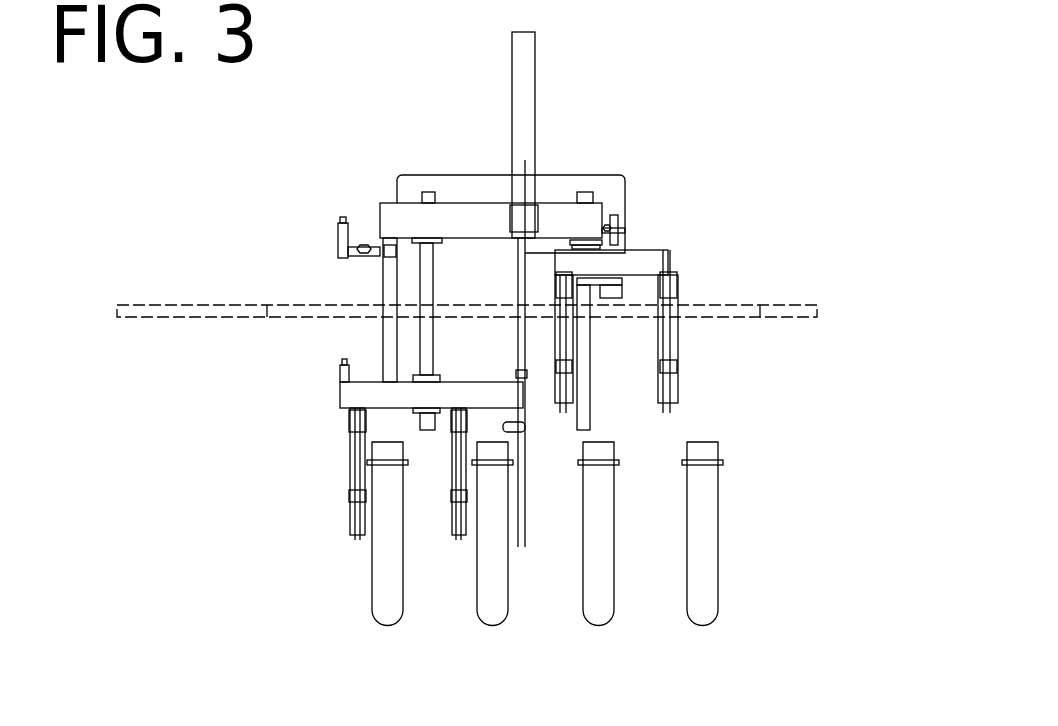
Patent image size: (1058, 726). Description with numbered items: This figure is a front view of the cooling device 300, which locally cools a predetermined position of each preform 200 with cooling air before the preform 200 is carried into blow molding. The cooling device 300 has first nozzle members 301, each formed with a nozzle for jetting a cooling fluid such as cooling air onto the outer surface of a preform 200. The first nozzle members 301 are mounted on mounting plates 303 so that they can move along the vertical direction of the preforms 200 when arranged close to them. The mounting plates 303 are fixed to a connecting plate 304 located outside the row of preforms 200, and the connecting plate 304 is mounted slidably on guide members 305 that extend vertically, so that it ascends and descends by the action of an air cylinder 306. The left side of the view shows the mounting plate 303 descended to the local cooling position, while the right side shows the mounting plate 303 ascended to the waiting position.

The cooling device 300 is at (748, 136).
The first nozzle member 301 is at (358, 535).
The mounting plate 303 is at (352, 440).
The connecting plate 304 is at (470, 385).
The guide member 305 is at (427, 262).
The air cylinder 306 is at (527, 137).
The preform 200 is at (710, 525).